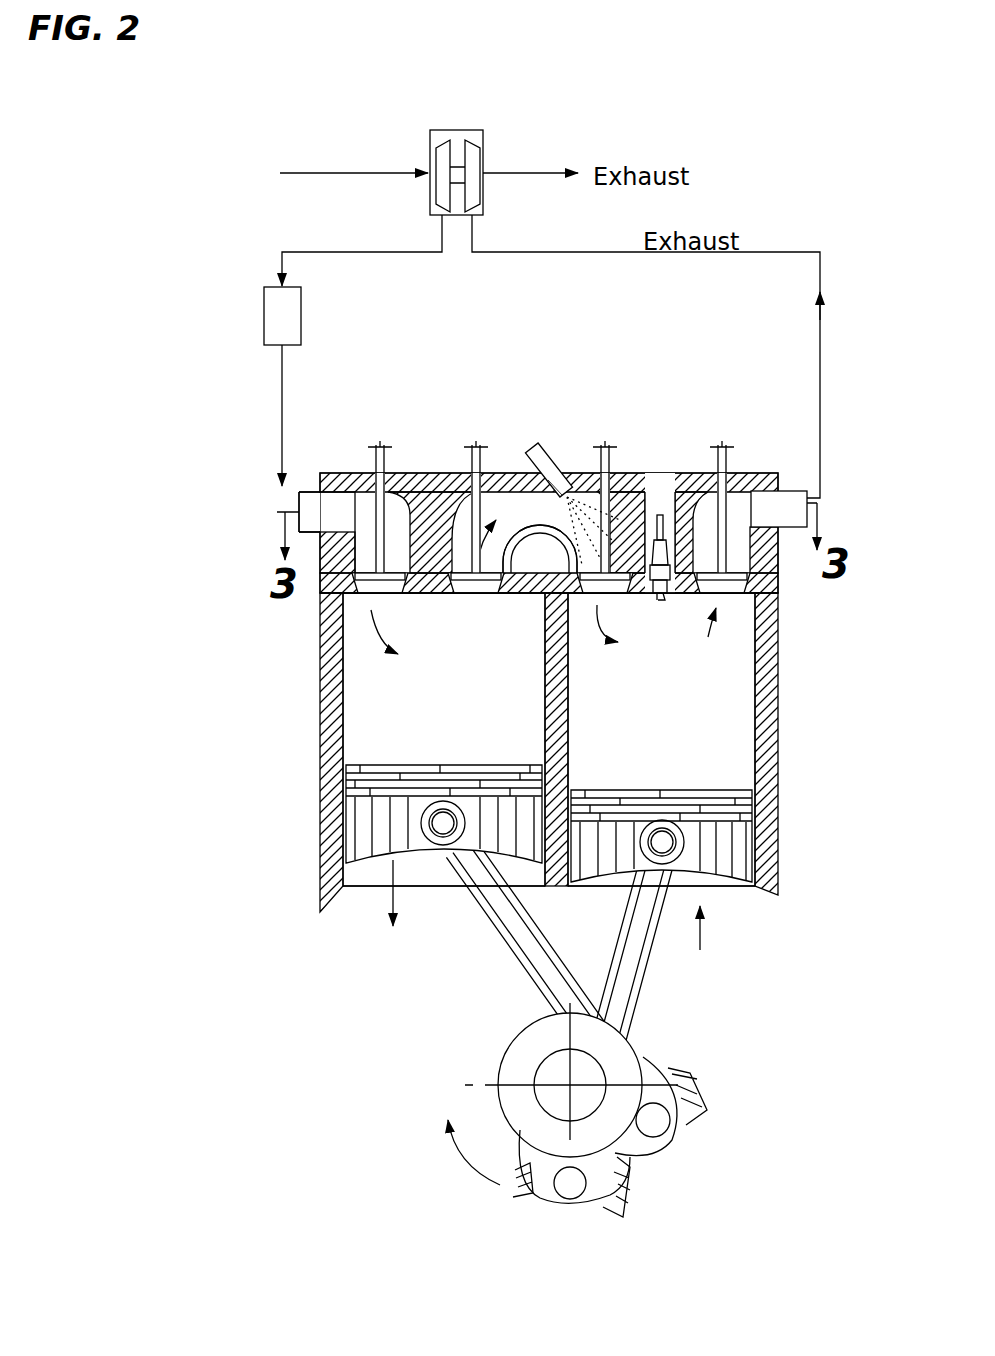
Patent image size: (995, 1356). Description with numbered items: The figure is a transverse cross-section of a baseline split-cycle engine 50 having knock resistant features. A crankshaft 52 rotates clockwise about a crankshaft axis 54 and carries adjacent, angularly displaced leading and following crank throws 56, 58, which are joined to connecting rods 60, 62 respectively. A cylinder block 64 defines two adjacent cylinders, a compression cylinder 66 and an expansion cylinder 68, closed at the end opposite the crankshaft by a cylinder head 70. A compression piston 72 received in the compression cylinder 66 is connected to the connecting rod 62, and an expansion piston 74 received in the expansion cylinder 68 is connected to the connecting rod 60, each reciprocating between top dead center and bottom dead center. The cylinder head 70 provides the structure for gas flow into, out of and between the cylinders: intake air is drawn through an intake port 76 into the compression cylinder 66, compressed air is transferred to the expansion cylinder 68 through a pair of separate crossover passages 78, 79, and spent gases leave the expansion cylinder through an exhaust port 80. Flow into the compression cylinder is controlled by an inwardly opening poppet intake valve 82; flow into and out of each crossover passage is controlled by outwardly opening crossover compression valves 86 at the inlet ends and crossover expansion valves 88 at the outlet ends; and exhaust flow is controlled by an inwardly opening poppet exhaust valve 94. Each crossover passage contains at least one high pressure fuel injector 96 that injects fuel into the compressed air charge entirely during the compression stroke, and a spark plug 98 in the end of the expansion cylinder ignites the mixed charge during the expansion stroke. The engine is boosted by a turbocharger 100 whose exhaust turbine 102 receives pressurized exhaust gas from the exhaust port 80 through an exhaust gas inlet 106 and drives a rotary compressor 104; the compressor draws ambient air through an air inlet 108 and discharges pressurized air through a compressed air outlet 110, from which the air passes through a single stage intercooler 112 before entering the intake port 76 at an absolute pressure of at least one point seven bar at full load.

The split-cycle engine 50 is at (224, 637).
The crankshaft 52 is at (557, 1065).
The crankshaft axis 54 is at (566, 1083).
The leading crank throw 56 is at (578, 1210).
The following crank throw 58 is at (667, 1142).
The connecting rod 60 is at (640, 996).
The connecting rod 62 is at (512, 952).
The cylinder block 64 is at (794, 816).
The compression cylinder 66 is at (340, 726).
The expansion cylinder 68 is at (748, 688).
The cylinder head 70 is at (789, 574).
The compression piston 72 is at (378, 866).
The expansion piston 74 is at (722, 882).
The intake port 76 is at (300, 490).
The crossover passage 78 is at (520, 487).
The crossover passage 79 is at (520, 487).
The exhaust port 80 is at (790, 488).
The intake valve 82 is at (376, 450).
The crossover compression valve 86 is at (470, 470).
The crossover expansion valve 88 is at (612, 467).
The exhaust valve 94 is at (728, 465).
The fuel injector 96 is at (552, 460).
The spark plug 98 is at (658, 514).
The turbocharger 100 is at (410, 136).
The exhaust turbine 102 is at (473, 157).
The rotary compressor 104 is at (443, 153).
The exhaust gas inlet 106 is at (474, 219).
The air inlet 108 is at (426, 172).
The compressed air outlet 110 is at (443, 218).
The intercooler 112 is at (264, 330).